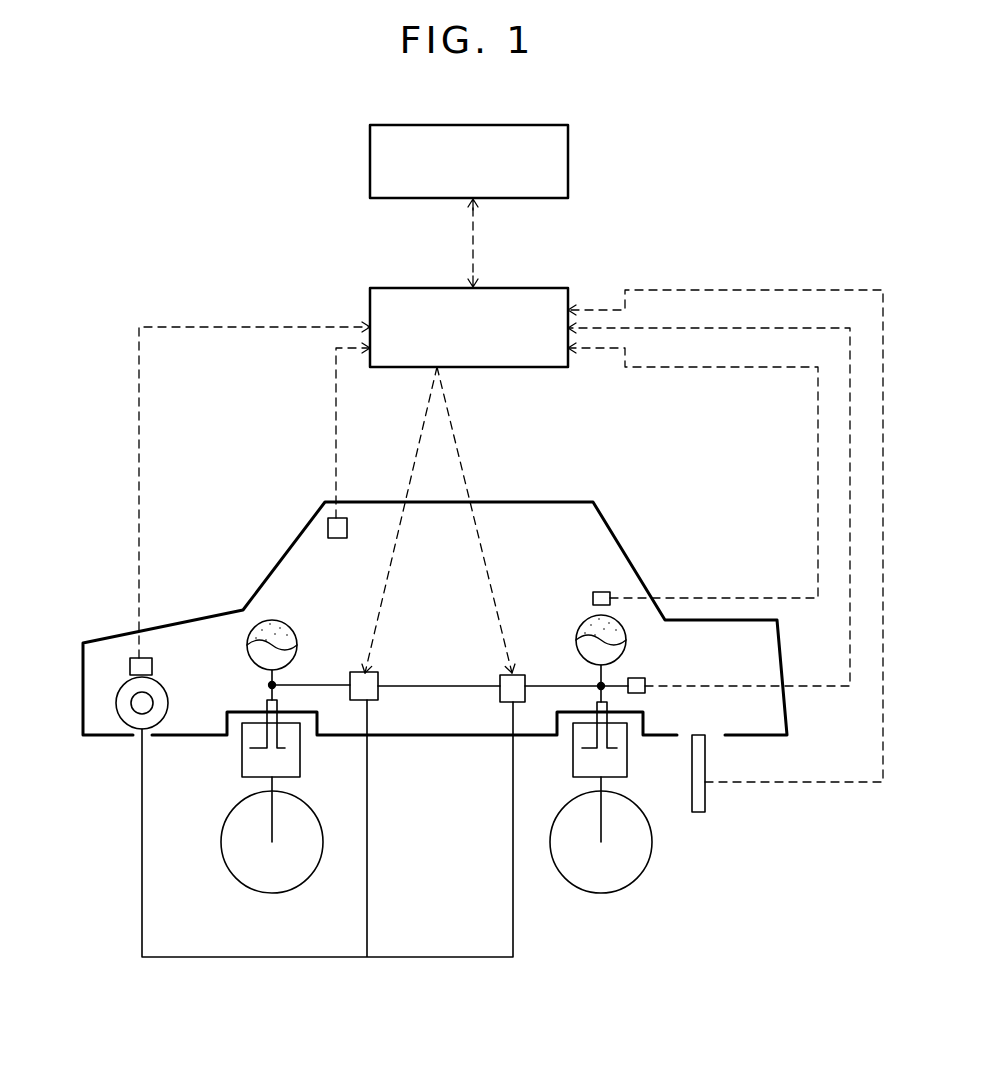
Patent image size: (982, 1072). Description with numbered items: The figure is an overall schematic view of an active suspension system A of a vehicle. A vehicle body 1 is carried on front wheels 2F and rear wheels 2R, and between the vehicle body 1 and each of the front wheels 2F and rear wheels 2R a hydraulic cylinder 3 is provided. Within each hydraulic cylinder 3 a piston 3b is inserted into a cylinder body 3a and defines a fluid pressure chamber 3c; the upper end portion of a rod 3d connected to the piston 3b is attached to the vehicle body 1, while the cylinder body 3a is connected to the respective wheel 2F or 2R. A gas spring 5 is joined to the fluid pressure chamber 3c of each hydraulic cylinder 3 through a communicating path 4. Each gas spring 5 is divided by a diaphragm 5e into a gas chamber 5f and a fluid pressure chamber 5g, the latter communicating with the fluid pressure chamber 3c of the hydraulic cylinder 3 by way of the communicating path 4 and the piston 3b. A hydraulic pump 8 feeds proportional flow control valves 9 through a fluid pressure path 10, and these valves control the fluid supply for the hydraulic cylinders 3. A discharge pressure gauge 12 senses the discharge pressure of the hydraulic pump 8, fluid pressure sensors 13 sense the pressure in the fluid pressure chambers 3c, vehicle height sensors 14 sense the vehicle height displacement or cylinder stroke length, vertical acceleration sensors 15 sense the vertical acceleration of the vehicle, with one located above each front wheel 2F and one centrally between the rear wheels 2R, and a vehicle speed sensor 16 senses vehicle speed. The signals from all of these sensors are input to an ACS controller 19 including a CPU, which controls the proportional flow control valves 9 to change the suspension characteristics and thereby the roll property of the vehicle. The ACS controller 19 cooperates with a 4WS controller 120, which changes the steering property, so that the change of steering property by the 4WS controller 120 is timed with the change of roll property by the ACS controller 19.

The active suspension system A is at (275, 243).
The vehicle body 1 is at (562, 493).
The front vehicle wheel members 2F is at (310, 878).
The rear vehicle wheel members 2R is at (640, 880).
The hydraulic cylinder 3 is at (436, 767).
The cylinder body 3a is at (285, 750).
The piston 3b is at (298, 758).
The fluid pressure chamber 3c is at (258, 768).
The rod 3d is at (265, 710).
The communicating path 4 is at (278, 686).
The gas spring 5 is at (268, 606).
The diaphragm 5e is at (247, 652).
The gas chamber 5f is at (288, 628).
The fluid pressure chamber of gas spring 5g is at (262, 672).
The hydraulic pump 8 is at (116, 706).
The proportional flow control valve 9 is at (500, 686).
The fluid pressure path 10 is at (312, 958).
The discharge pressure gauge 12 is at (146, 658).
The fluid pressure sensor 13 is at (645, 684).
The vehicle height sensor 14 is at (705, 753).
The vertical acceleration sensor 15 is at (592, 590).
The vehicle speed sensor 16 is at (347, 538).
The ACS controller 19 is at (370, 305).
The 4WS controller 120 is at (370, 167).